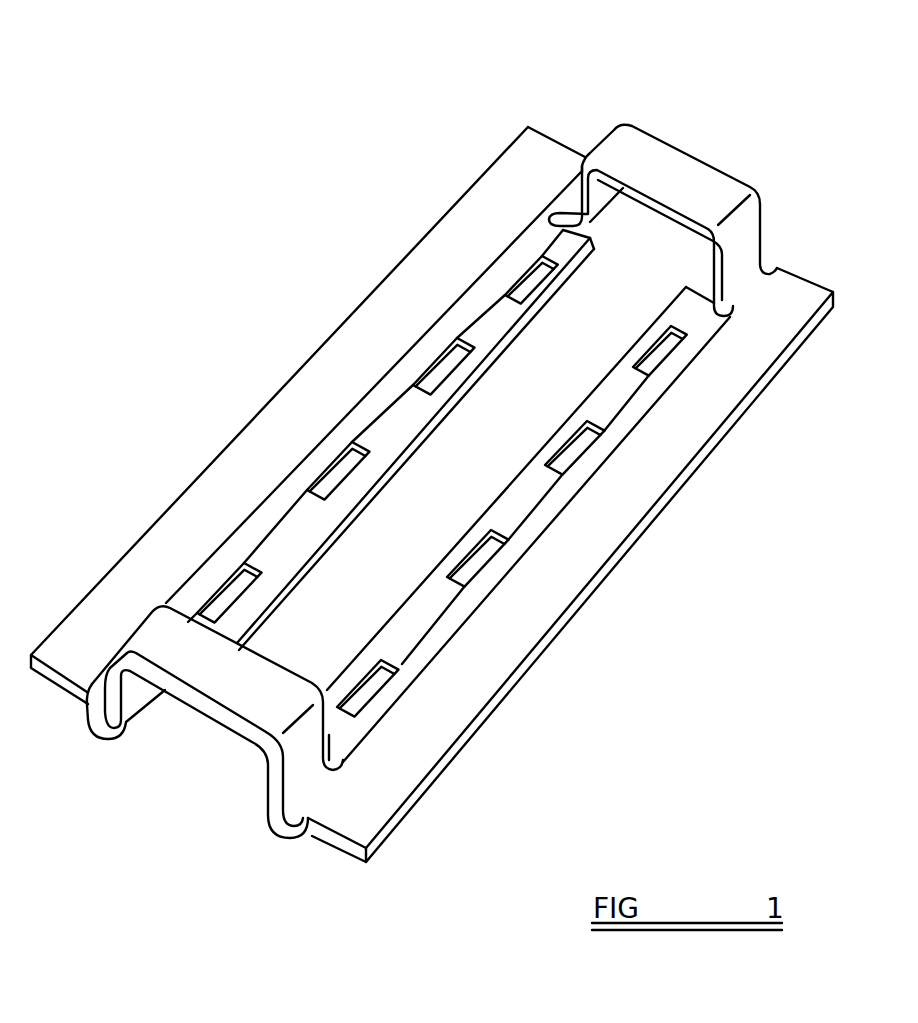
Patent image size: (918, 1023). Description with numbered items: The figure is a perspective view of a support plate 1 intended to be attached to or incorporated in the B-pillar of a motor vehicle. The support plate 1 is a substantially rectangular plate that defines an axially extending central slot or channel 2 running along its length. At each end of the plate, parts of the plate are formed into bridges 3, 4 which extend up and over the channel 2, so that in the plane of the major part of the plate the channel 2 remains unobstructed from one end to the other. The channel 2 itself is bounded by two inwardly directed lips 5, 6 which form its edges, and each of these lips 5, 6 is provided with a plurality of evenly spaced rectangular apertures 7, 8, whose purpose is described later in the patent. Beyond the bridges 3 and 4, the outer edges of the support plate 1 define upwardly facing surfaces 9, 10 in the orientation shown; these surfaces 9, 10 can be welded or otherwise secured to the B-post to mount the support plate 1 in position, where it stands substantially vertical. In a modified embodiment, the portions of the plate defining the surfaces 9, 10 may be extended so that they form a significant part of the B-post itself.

The support plate 1 is at (396, 106).
The channel 2 is at (230, 748).
The bridge 3 is at (710, 173).
The bridge 4 is at (210, 672).
The lip 5 is at (310, 522).
The lip 6 is at (427, 614).
The rectangular apertures 7 is at (527, 276).
The rectangular apertures 8 is at (673, 343).
The upwardly facing surface 9 is at (365, 332).
The upwardly facing surface 10 is at (588, 537).